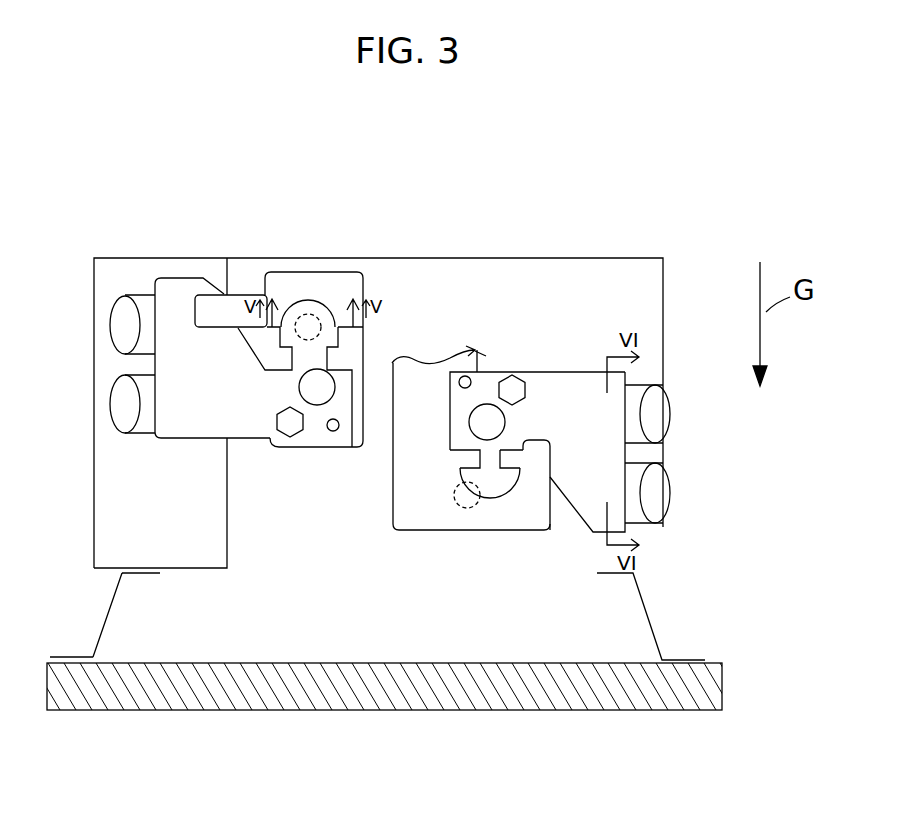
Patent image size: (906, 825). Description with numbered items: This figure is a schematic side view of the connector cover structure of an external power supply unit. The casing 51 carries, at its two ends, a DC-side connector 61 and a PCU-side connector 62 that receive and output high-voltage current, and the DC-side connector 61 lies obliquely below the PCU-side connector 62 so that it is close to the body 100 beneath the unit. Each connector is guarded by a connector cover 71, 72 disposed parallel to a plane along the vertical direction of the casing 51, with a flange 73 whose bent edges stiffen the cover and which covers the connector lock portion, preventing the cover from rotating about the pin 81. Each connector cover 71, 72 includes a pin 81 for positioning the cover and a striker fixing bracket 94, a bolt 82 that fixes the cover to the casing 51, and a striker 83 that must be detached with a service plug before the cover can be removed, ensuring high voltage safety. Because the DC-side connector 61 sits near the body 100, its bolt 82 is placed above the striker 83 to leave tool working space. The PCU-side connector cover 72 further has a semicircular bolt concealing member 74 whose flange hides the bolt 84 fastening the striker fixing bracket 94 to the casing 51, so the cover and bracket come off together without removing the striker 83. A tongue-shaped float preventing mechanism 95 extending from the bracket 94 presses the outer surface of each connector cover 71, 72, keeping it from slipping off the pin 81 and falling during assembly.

The casing 51 is at (512, 257).
The DC-side connector 61 is at (670, 495).
The PCU-side connector 62 is at (108, 402).
The connector cover 71 is at (564, 383).
The PCU-side connector cover 72 is at (193, 409).
The flange 73 is at (150, 308).
The bolt concealing member 74 is at (298, 302).
The pin 81 is at (330, 431).
The bolt 82 is at (277, 443).
The striker 83 is at (340, 405).
The fastening member (bolt) 84 is at (333, 307).
The striker fixing bracket 94 is at (324, 283).
The float preventing mechanism 95 is at (190, 300).
The body 100 is at (357, 662).